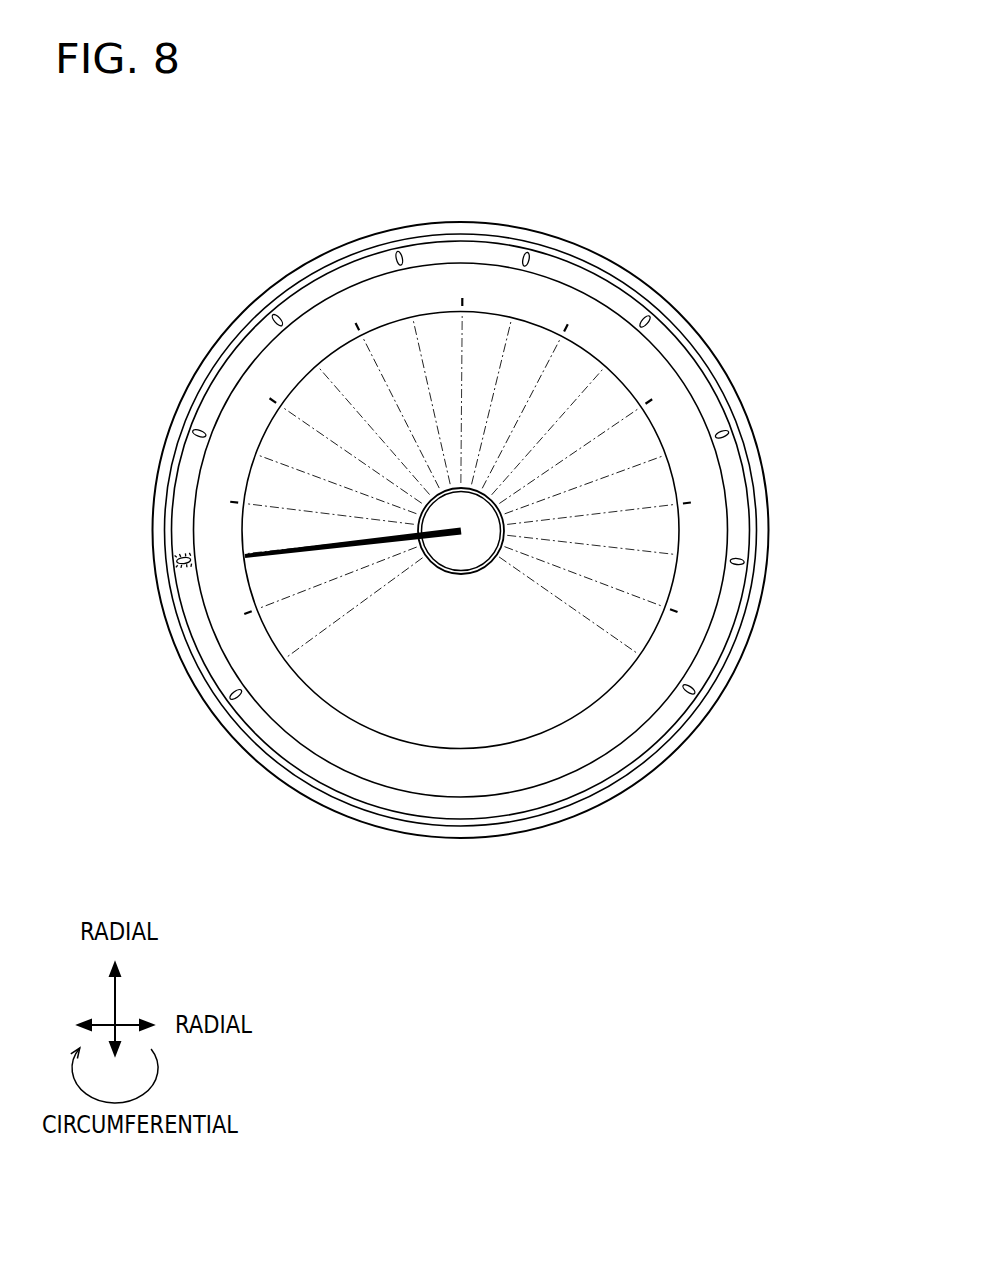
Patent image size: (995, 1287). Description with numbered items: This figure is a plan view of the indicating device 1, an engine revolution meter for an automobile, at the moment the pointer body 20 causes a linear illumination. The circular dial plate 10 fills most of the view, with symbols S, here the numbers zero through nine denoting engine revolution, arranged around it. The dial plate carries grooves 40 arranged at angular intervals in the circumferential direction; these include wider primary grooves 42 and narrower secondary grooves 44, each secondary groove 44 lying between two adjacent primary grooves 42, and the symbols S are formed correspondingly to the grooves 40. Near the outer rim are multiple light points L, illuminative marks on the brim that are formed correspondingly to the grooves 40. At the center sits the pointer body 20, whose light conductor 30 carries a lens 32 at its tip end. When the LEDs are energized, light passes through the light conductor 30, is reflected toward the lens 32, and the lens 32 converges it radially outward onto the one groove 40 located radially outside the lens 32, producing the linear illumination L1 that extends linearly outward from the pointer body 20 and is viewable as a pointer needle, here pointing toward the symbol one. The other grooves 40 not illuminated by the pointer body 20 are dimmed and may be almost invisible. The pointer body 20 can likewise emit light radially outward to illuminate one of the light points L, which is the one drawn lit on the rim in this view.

The indicating device 1 is at (738, 281).
The dial plate 10 is at (585, 760).
The pointer body 20 is at (472, 582).
The light conductor 30 is at (450, 577).
The lens 32 is at (428, 568).
The grooves 40 is at (461, 512).
The primary grooves 42 is at (243, 503).
The secondary grooves 44 is at (284, 508).
The light points L is at (202, 436).
The linear illumination L1 is at (255, 540).
The symbols S is at (262, 688).